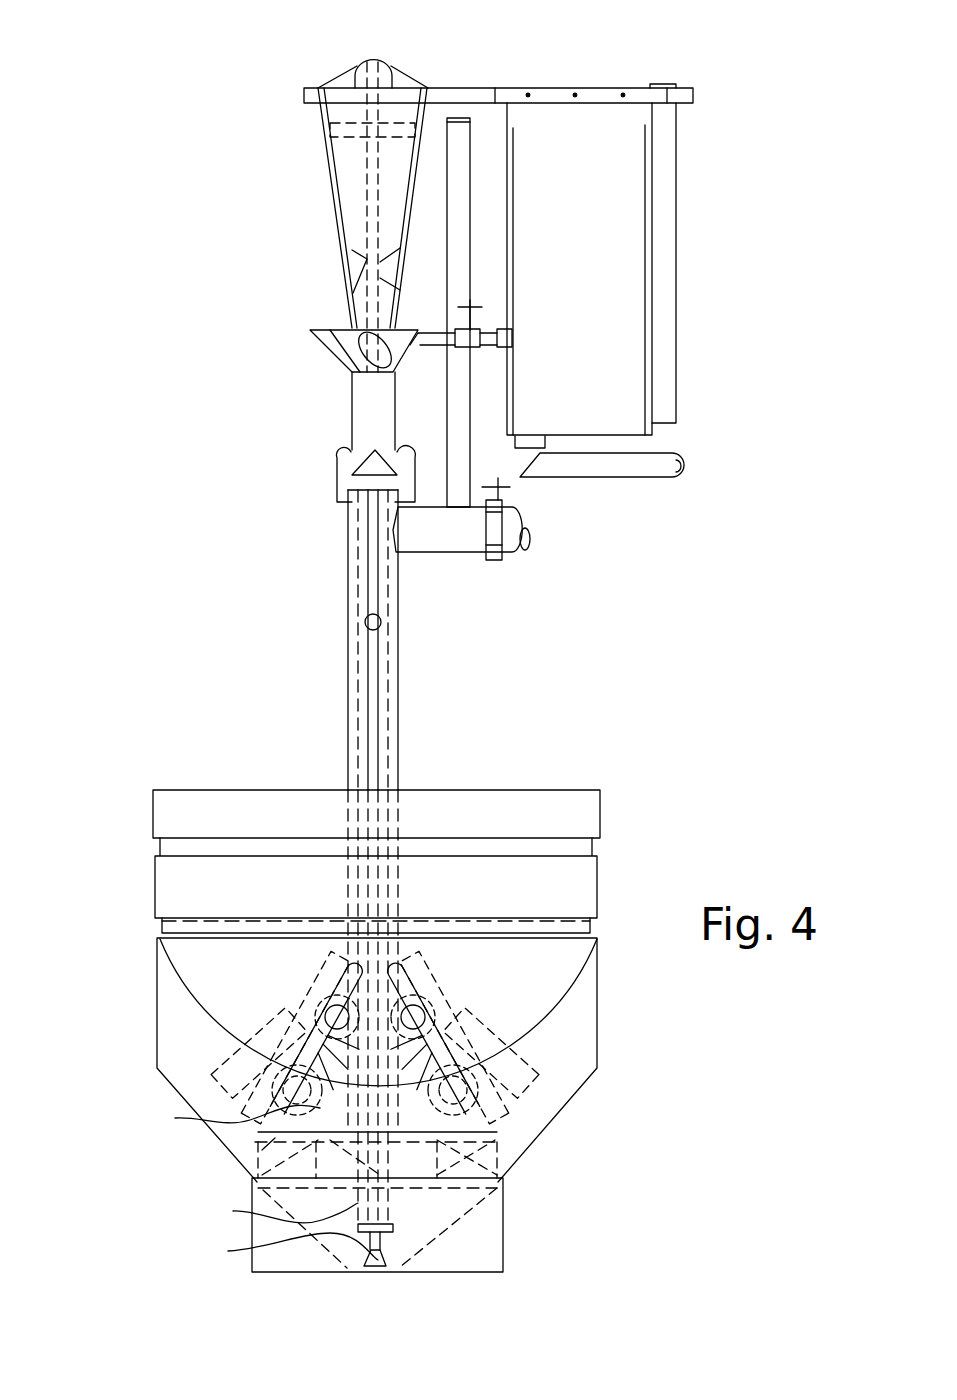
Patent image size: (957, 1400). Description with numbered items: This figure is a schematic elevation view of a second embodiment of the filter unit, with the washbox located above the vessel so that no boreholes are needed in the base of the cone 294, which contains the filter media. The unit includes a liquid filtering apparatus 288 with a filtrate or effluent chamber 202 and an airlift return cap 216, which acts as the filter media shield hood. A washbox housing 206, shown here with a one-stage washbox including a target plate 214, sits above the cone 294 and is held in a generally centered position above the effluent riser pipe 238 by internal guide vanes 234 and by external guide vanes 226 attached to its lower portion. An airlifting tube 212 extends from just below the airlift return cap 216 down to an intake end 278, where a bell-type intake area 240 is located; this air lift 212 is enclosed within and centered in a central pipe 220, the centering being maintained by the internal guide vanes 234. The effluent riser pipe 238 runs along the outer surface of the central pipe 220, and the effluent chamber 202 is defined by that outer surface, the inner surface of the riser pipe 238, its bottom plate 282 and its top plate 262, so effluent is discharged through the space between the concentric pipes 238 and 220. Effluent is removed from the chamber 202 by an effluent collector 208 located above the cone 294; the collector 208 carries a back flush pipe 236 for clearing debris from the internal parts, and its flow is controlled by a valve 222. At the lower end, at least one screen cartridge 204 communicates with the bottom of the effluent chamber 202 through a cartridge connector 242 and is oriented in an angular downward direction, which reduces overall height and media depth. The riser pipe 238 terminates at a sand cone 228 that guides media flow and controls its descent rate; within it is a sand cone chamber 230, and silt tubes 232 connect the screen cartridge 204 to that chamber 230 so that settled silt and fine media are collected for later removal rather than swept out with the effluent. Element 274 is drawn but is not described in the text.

The effluent chamber 202 is at (348, 578).
The screen cartridge 204 is at (356, 1060).
The washbox housing 206 is at (334, 212).
The effluent collector 208 is at (442, 538).
The airlifting tube 212 is at (387, 1270).
The target plate 214 is at (330, 134).
The airlift return cap 216 is at (388, 54).
The central pipe 220 is at (695, 131).
The valve 222 is at (500, 469).
The external guide vanes 226 is at (344, 457).
The sand cone 228 is at (475, 1134).
The sand cone chamber 230 is at (410, 1115).
The silt tubes 232 is at (273, 1137).
The internal guide vanes 234 is at (381, 626).
The back flush pipe 236 is at (462, 116).
The effluent riser pipe 238 is at (400, 748).
The intake area 240 is at (373, 1270).
The cartridge connector 242 is at (410, 996).
The top plate 262 is at (368, 495).
The base box 274 is at (503, 1229).
The intake end 278 is at (267, 1250).
The bottom plate 282 is at (318, 1006).
The liquid filtering apparatus 288 is at (602, 86).
The cone 294 is at (528, 790).